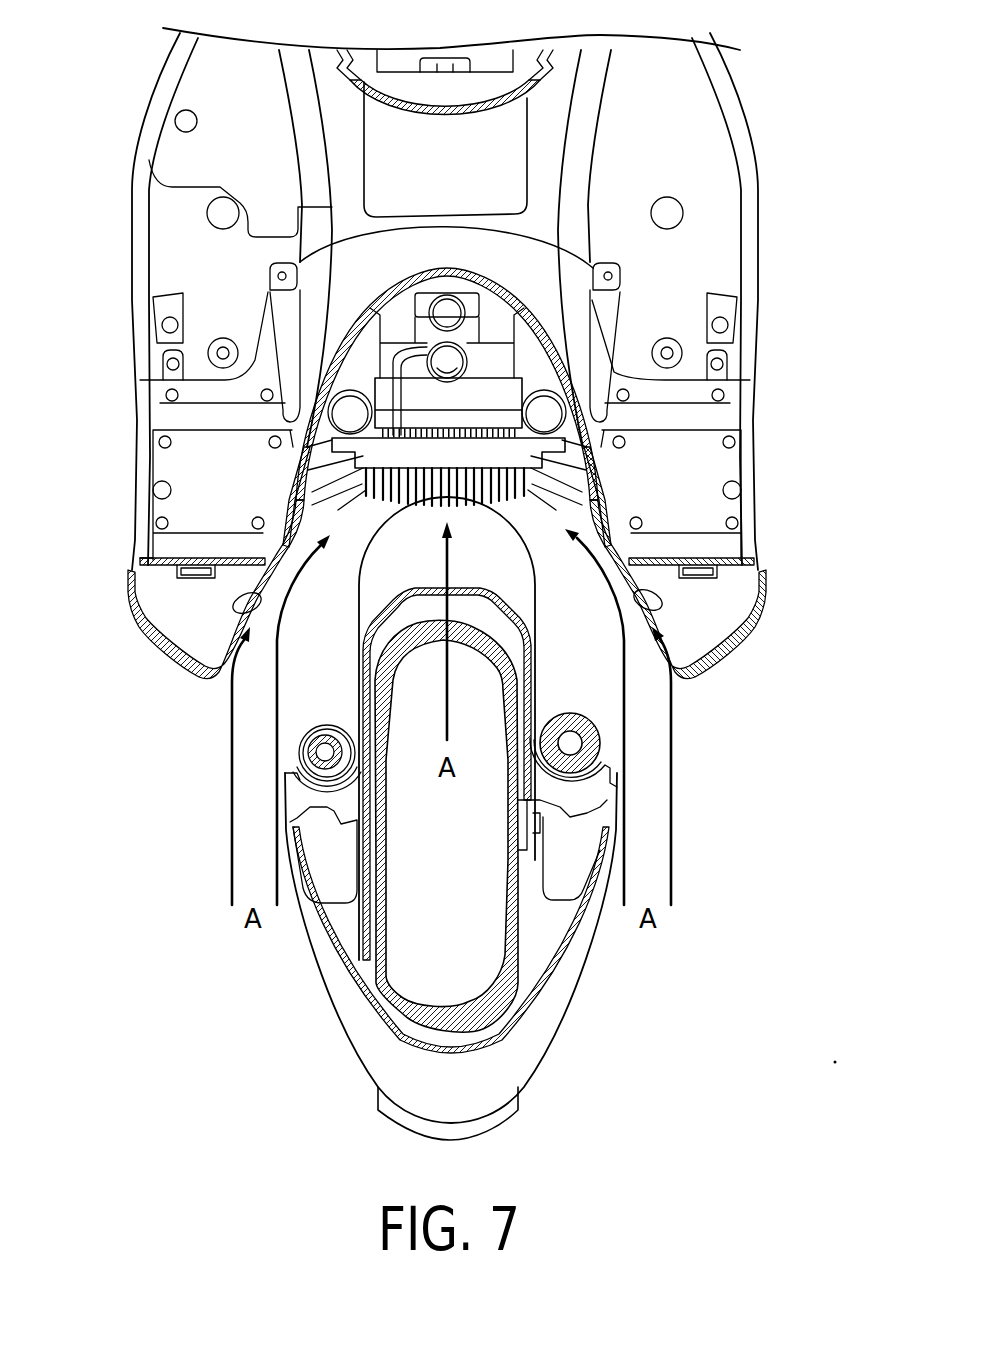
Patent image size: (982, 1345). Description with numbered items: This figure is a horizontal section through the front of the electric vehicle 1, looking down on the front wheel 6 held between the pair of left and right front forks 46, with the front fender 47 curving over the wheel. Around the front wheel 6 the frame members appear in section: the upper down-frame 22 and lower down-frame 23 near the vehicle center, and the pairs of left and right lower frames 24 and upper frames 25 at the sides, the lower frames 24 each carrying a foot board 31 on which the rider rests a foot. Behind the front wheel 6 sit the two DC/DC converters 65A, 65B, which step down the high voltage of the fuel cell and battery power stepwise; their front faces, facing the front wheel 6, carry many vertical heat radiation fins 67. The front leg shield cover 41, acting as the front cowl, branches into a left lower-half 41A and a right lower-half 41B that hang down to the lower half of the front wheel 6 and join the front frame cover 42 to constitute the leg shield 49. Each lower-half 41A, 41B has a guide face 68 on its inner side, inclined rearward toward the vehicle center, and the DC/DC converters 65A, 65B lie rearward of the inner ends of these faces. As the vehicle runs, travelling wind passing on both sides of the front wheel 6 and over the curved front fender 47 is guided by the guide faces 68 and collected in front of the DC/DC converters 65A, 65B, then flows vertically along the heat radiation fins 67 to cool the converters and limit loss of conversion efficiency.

The electric vehicle 1 is at (126, 99).
The foot board 31 is at (177, 172).
The lower down-frame 23 is at (360, 340).
The upper frames 25 is at (385, 322).
The lower frames 24 is at (345, 410).
The upper down-frame 22 is at (505, 290).
The DC/DC converter 65B is at (505, 378).
The DC/DC converter 65A is at (527, 447).
The front frame cover 42 is at (180, 464).
The leg shield 49 is at (125, 531).
The heat radiation fins 67 is at (265, 522).
The guide face 68 is at (262, 605).
The front leg shield cover 41 is at (448, 563).
The left lower-half 41A is at (727, 650).
The right lower-half 41B is at (178, 657).
The front forks 46 is at (300, 752).
The front wheel 6 is at (513, 797).
The front fender 47 is at (550, 1027).